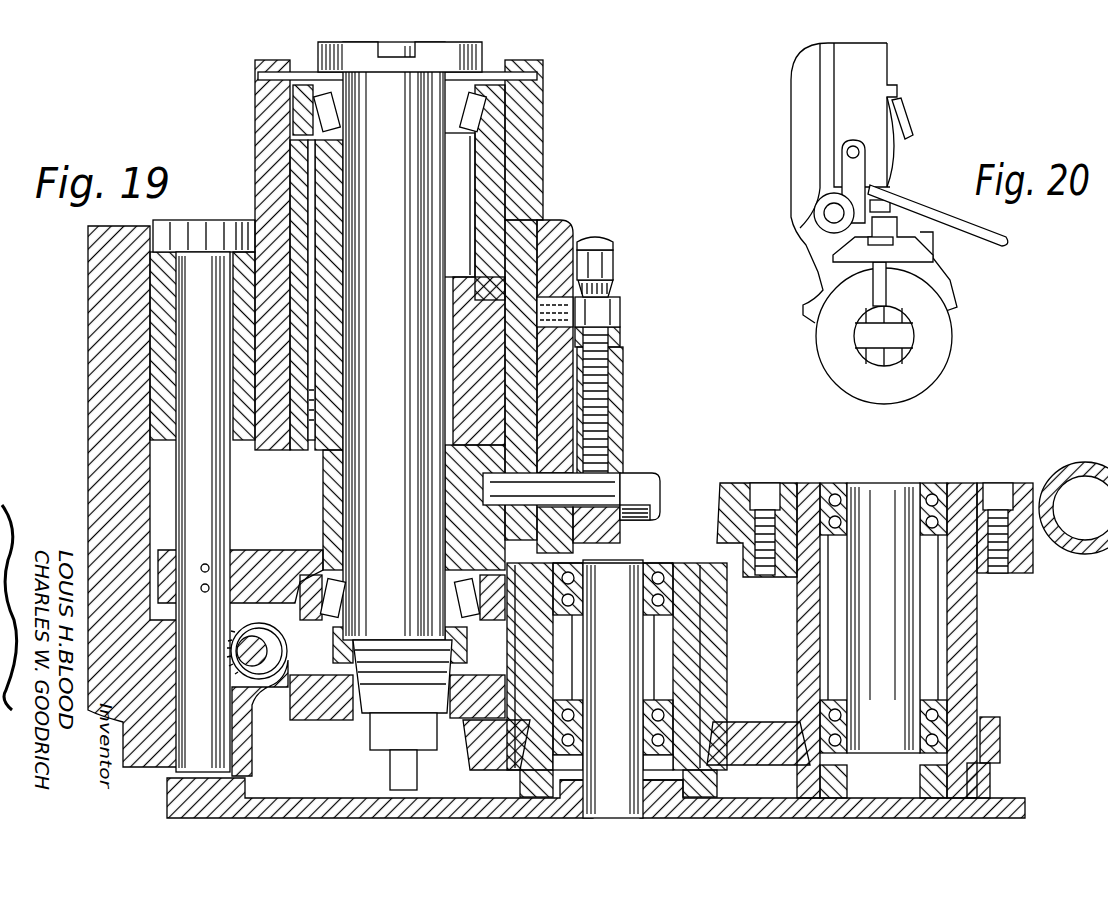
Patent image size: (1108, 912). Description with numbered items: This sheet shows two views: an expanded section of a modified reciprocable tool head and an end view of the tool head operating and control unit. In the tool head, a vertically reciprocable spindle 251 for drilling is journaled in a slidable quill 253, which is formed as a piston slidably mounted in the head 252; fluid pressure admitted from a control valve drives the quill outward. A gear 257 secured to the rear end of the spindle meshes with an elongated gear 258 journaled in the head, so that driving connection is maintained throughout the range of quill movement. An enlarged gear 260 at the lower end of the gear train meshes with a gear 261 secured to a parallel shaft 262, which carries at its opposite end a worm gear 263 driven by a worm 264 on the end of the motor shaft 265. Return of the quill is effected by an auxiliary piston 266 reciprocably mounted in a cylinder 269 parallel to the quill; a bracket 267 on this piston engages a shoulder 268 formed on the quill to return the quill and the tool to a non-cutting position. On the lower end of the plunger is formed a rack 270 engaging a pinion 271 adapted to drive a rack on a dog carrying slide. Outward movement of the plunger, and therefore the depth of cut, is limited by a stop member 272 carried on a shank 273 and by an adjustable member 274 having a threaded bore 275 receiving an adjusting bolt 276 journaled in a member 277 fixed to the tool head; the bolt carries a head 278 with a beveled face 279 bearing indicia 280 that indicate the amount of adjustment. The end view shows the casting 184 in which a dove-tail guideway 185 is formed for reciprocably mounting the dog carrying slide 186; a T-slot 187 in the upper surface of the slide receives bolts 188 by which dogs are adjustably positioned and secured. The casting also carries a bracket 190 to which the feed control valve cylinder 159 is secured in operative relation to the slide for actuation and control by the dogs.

In FIG. 19, the spindle 251 is at (430, 190).
In FIG. 19, the quill 253 is at (503, 195).
In FIG. 19, the head 252 is at (88, 345).
In FIG. 19, the cylinder 269 is at (173, 337).
In FIG. 19, the auxiliary piston 266 is at (215, 472).
In FIG. 19, the bracket 267 is at (250, 556).
In FIG. 19, the shoulder 268 is at (283, 614).
In FIG. 19, the pinion 271 is at (268, 654).
In FIG. 19, the rack 270 is at (253, 700).
In FIG. 19, the gear 257 is at (320, 724).
In FIG. 19, the head 278 is at (598, 248).
In FIG. 19, the beveled face 279 is at (614, 276).
In FIG. 19, the indicia 280 is at (625, 287).
In FIG. 19, the member 277 is at (622, 312).
In FIG. 19, the adjusting bolt 276 is at (622, 335).
In FIG. 19, the threaded bore 275 is at (610, 382).
In FIG. 19, the adjustable member 274 is at (624, 418).
In FIG. 19, the stop member 272 is at (515, 507).
In FIG. 19, the shank 273 is at (600, 487).
In FIG. 19, the elongated gear 258 is at (703, 562).
In FIG. 19, the enlarged gear 260 is at (742, 722).
In FIG. 19, the parallel shaft 262 is at (917, 638).
In FIG. 19, the worm gear 263 is at (717, 488).
In FIG. 19, the worm 264 is at (1060, 470).
In FIG. 19, the motor shaft 265 is at (1082, 535).
In FIG. 19, the gear 261 is at (1003, 735).
In FIG. 20, the bracket 190 is at (797, 98).
In FIG. 20, the feed control valve cylinder 159 is at (898, 155).
In FIG. 20, the bolts 188 is at (883, 227).
In FIG. 20, the T-slot 187 is at (890, 232).
In FIG. 20, the dog carrying slide 186 is at (905, 232).
In FIG. 20, the casting 184 is at (815, 258).
In FIG. 20, the dove-tail guideway 185 is at (935, 243).